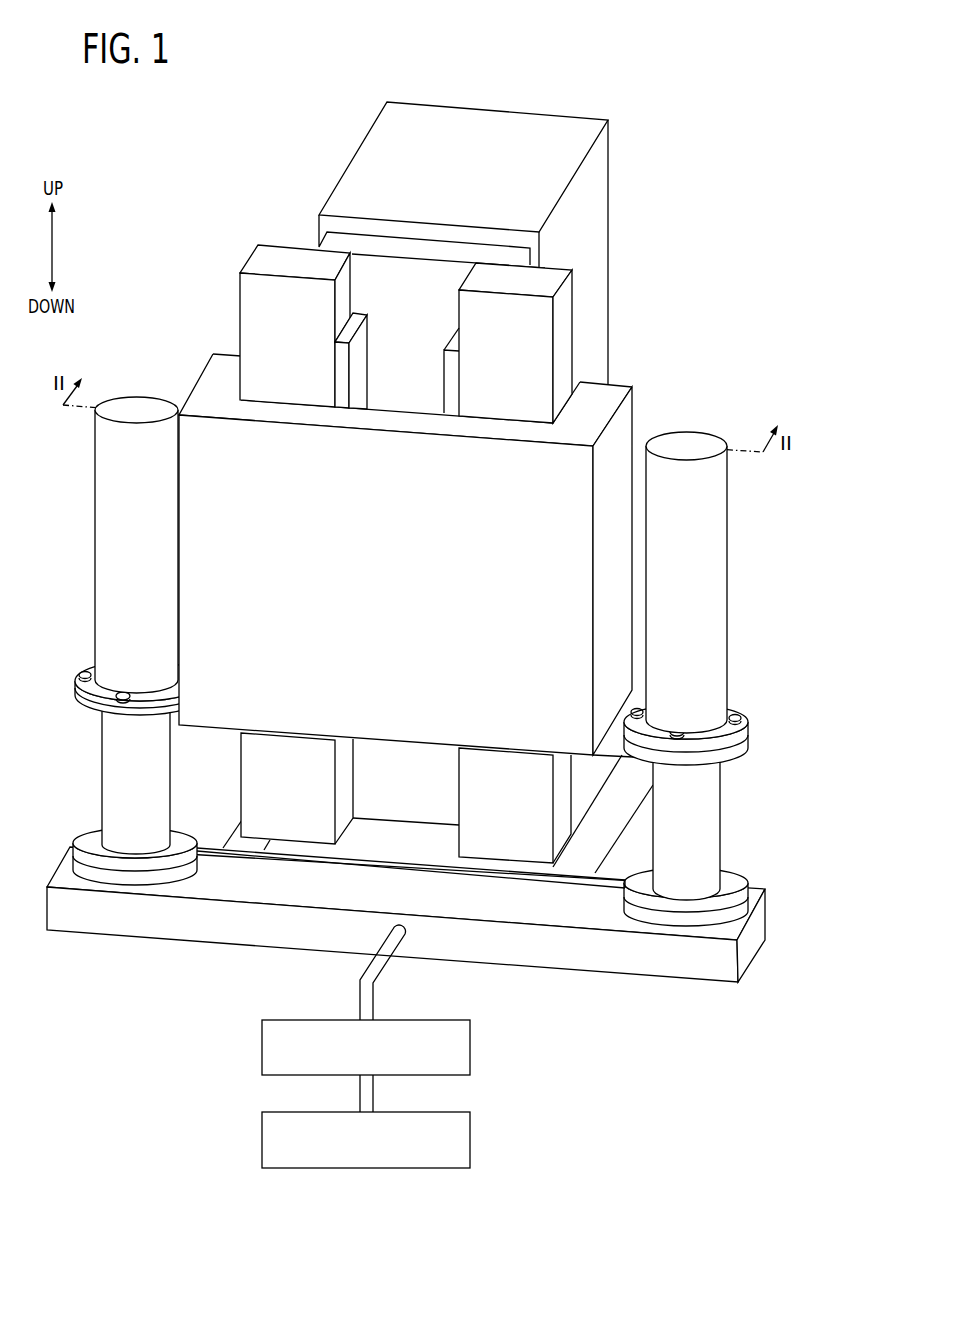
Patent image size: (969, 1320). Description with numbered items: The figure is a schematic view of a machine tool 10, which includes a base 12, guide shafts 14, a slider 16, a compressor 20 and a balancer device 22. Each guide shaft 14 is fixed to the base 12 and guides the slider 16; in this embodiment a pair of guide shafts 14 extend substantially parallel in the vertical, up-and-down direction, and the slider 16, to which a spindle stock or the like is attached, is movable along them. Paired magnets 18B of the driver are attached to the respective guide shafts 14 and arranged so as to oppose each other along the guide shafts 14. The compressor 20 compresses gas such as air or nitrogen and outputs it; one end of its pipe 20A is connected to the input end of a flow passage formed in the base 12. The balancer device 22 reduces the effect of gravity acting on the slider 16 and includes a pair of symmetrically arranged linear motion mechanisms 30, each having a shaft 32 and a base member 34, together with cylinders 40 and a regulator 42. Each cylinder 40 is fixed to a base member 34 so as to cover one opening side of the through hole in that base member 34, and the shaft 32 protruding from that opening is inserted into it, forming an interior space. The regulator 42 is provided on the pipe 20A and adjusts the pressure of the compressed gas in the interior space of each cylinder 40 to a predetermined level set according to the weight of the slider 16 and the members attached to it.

The machine tool 10 is at (700, 109).
The base 12 is at (577, 912).
The guide shaft 14 is at (255, 300).
The slider 16 is at (405, 732).
The magnet 18B is at (452, 372).
The compressor 20 is at (472, 1128).
The pipe 20A is at (357, 997).
The balancer device 22 is at (706, 352).
The linear motion mechanism 30 is at (77, 652).
The shaft 32 is at (113, 783).
The base member 34 is at (85, 708).
The cylinder 40 is at (146, 410).
The regulator 42 is at (472, 1033).